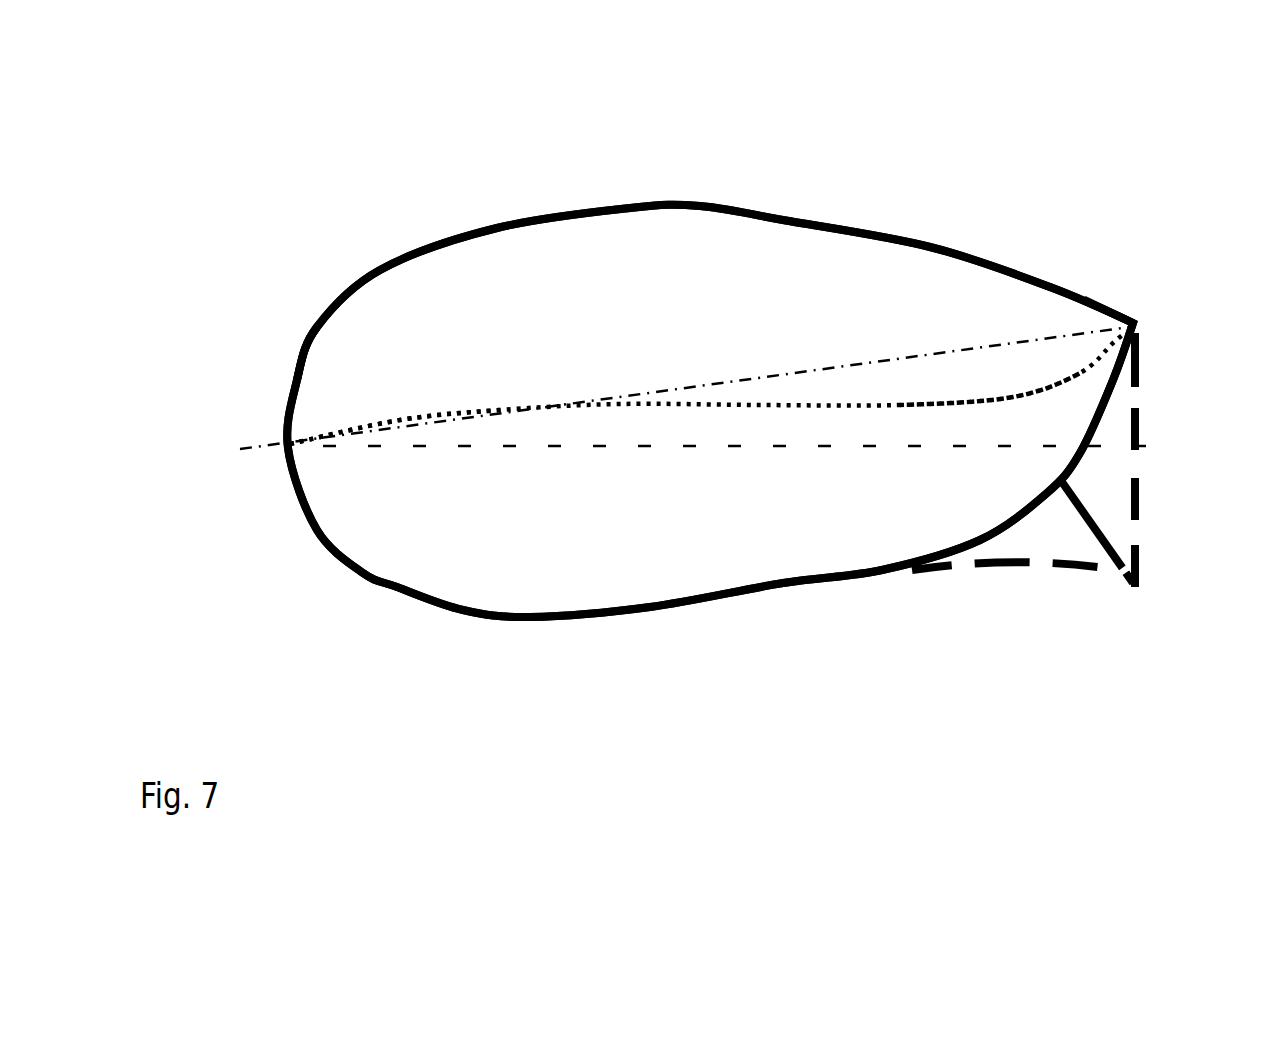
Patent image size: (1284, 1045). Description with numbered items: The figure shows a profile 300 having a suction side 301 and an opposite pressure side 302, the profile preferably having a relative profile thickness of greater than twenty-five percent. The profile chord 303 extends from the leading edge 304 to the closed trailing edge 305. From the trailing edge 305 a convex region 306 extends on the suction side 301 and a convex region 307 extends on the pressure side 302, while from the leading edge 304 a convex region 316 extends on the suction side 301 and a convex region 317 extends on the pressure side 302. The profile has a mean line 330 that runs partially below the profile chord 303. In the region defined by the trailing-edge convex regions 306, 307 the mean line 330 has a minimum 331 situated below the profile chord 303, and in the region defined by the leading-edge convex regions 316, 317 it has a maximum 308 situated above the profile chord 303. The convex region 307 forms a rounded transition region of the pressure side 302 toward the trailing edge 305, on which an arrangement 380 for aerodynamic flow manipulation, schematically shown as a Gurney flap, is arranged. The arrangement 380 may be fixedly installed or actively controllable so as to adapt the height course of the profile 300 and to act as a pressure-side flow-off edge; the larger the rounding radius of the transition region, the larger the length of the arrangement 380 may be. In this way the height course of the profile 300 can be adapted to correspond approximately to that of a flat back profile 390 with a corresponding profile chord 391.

The profile 300 is at (985, 173).
The suction side 301 is at (735, 207).
The pressure side 302 is at (712, 607).
The profile chord 303 is at (942, 350).
The leading edge 304 is at (283, 447).
The trailing edge 305 is at (1142, 325).
The convex region 306 is at (1078, 290).
The convex region 307 is at (1050, 505).
The maximum 308 is at (497, 413).
The convex region 316 is at (323, 328).
The convex region 317 is at (360, 575).
The mean line 330 is at (375, 425).
The minimum 331 is at (975, 410).
The arrangement for aerodynamic flow manipulation 380 is at (1097, 517).
The flat back profile 390 is at (985, 573).
The profile chord 391 is at (787, 450).